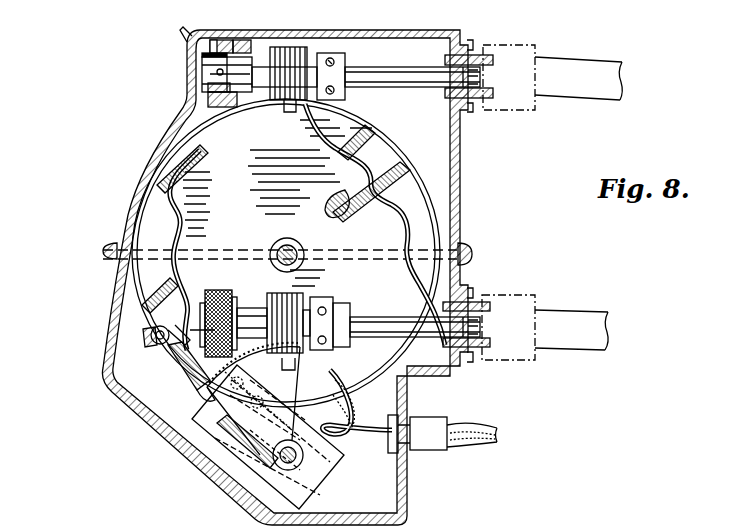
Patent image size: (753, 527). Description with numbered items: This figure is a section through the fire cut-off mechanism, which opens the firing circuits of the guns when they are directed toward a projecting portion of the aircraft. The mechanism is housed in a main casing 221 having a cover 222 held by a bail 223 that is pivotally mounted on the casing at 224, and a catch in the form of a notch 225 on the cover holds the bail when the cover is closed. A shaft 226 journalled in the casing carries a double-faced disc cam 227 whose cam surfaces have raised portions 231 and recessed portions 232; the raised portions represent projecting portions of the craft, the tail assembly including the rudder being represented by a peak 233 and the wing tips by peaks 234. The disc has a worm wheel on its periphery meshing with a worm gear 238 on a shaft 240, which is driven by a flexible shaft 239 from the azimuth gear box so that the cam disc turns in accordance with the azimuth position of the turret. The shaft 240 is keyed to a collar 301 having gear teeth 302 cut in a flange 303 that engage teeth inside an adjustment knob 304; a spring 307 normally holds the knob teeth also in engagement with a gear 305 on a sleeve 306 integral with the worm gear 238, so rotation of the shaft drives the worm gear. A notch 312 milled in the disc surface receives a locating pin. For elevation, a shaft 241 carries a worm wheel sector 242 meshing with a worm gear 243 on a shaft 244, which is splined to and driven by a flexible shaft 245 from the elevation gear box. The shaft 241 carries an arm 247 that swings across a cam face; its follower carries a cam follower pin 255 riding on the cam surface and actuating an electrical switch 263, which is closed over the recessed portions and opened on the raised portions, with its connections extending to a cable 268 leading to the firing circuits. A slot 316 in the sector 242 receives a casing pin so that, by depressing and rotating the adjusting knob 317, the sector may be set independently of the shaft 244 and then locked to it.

The main casing 221 is at (458, 180).
The cover 222 is at (125, 213).
The bail 223 is at (103, 248).
The pivot of bail 224 is at (470, 253).
The notch 225 is at (117, 257).
The shaft 226 is at (305, 258).
The double-faced disc cam 227 is at (160, 287).
The raised portions 231 is at (155, 187).
The recessed portions 232 is at (277, 225).
The peak 233 is at (337, 208).
The peaks 234 is at (207, 152).
The worm gear 238 is at (303, 53).
The flexible shaft 239 is at (610, 95).
The shaft 240 is at (397, 70).
The shaft 241 is at (277, 460).
The worm wheel sector 242 is at (200, 410).
The worm gear 243 is at (287, 297).
The shaft 244 is at (370, 323).
The flexible shaft 245 is at (583, 310).
The arm 247 is at (245, 437).
The cam follower pin 255 is at (158, 353).
The electrical switch 263 is at (178, 372).
The cable 268 is at (487, 425).
The collar 301 is at (203, 67).
The gear teeth 302 is at (237, 33).
The flange 303 is at (205, 57).
The adjustment knob 304 is at (212, 107).
The gear 305 is at (237, 60).
The sleeve 306 is at (273, 47).
The spring 307 is at (210, 98).
The notch 312 is at (292, 113).
The slot 316 is at (297, 357).
The adjusting knob 317 is at (223, 290).